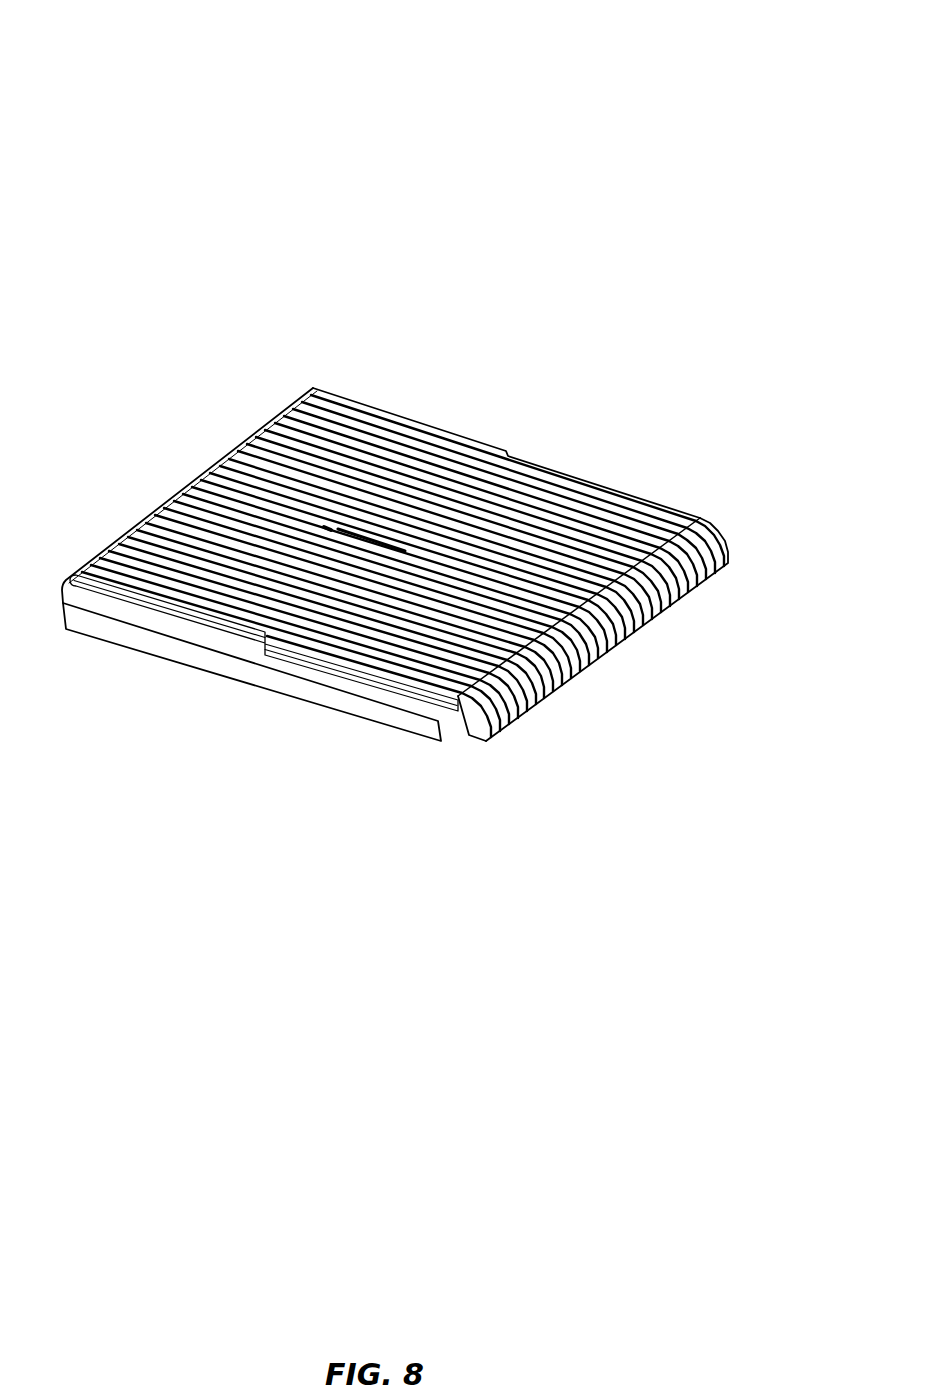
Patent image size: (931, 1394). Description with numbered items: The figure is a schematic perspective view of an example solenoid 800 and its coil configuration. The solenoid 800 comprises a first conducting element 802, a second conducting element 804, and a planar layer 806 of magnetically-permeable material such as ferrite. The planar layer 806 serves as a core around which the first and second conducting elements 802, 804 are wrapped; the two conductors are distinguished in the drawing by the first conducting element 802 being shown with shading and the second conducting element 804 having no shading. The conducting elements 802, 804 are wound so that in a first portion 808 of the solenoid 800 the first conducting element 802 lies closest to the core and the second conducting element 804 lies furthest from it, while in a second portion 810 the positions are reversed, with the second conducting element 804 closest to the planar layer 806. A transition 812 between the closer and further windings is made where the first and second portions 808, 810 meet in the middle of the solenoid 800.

The solenoid 800 is at (422, 392).
The first conducting element 802 is at (138, 598).
The second conducting element 804 is at (222, 603).
The planar layer of magnetically-permeable material 806 is at (337, 690).
The first portion 808 is at (549, 701).
The second portion 810 is at (703, 581).
The transition 812 is at (343, 513).